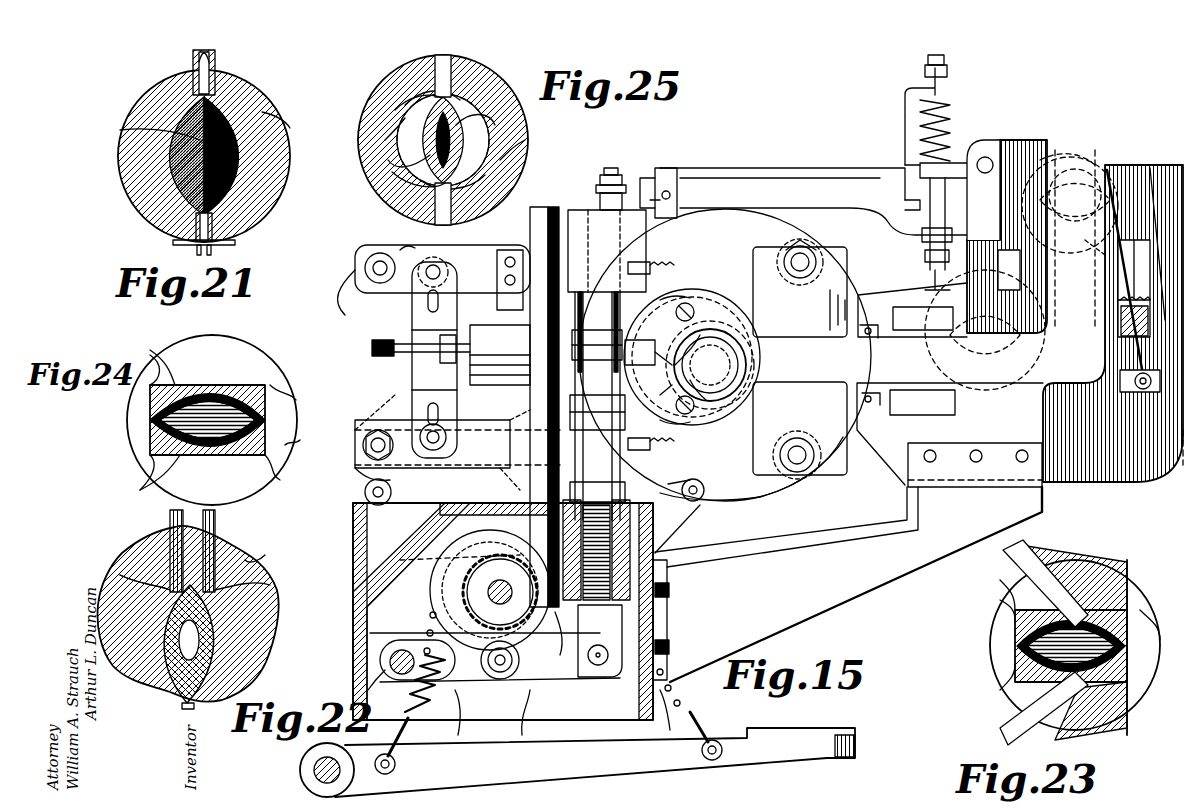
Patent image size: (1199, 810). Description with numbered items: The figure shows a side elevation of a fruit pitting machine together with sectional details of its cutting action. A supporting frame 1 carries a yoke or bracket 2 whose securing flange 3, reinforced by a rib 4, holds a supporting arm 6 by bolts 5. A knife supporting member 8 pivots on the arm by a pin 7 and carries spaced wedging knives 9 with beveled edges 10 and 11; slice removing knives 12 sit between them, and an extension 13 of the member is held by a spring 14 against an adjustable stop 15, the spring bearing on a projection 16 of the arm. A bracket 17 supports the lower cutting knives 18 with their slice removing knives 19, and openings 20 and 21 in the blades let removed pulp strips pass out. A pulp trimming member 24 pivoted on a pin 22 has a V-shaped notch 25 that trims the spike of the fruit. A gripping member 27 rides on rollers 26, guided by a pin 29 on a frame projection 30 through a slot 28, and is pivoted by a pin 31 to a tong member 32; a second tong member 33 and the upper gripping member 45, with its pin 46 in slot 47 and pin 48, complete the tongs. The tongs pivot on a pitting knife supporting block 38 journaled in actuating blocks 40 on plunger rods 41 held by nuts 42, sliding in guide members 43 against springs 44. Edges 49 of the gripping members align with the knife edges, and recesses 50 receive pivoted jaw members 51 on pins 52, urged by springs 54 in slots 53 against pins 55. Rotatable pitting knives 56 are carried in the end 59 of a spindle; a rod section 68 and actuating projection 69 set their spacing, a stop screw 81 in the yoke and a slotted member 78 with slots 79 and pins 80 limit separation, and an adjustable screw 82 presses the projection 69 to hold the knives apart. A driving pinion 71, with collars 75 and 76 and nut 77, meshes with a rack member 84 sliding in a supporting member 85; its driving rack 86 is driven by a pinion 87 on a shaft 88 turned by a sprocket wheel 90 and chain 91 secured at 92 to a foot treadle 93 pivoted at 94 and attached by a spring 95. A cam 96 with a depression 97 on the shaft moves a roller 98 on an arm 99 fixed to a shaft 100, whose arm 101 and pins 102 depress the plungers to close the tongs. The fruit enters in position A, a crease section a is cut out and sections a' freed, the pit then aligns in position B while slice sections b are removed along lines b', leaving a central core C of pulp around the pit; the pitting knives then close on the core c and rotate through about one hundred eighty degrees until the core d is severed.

In FIG. 21, the supporting casting or frame-work 1 is at (118, 128).
In FIG. 25, the supporting casting or frame-work 1 is at (490, 78).
In FIG. 22, the supporting casting or frame-work 1 is at (262, 605).
In FIG. 15, the supporting casting or frame-work 1 is at (353, 632).
In FIG. 15, the yoke or bracket 2 is at (572, 210).
In FIG. 21, the securing flange 3 is at (288, 122).
In FIG. 25, the securing flange 3 is at (520, 125).
In FIG. 15, the securing flange 3 is at (662, 168).
In FIG. 15, the rib 4 is at (615, 190).
In FIG. 15, the bolts 5 is at (675, 178).
In FIG. 15, the supporting arm or bracket 6 is at (805, 168).
In FIG. 15, the pin 7 is at (995, 150).
In FIG. 15, the knife supporting member 8 is at (928, 265).
In FIG. 21, the slice removing and wedging knives 9 is at (204, 50).
In FIG. 22, the slice removing and wedging knives 9 is at (170, 520).
In FIG. 15, the slice removing and wedging knives 9 is at (1085, 160).
In FIG. 15, the beveled cutting edge 10 is at (1070, 205).
In FIG. 22, the beveled cutting edge 11 is at (120, 575).
In FIG. 15, the beveled cutting edge 11 is at (905, 382).
In FIG. 23, the slice removing knives 12 is at (1012, 548).
In FIG. 15, the slice removing knives 12 is at (880, 340).
In FIG. 15, the extension 13 is at (940, 165).
In FIG. 15, the spring 14 is at (918, 145).
In FIG. 15, the adjustable stop member 15 is at (918, 198).
In FIG. 15, the projection 16 is at (950, 85).
In FIG. 23, the bracket 17 is at (1005, 552).
In FIG. 21, the spaced angular cutting knives 18 is at (215, 252).
In FIG. 15, the spaced angular cutting knives 18 is at (1110, 165).
In FIG. 23, the slice removing knives 19 is at (1005, 735).
In FIG. 15, the slice removing knives 19 is at (895, 428).
In FIG. 15, the openings or recesses 20 is at (900, 307).
In FIG. 15, the openings or recesses 21 is at (1125, 270).
In FIG. 15, the pivot pin 22 is at (1120, 378).
In FIG. 21, the pulp trimming member 24 is at (240, 238).
In FIG. 15, the pulp trimming member 24 is at (1118, 300).
In FIG. 15, the V-shaped trimming notch 25 is at (1140, 172).
In FIG. 15, the rollers 26 is at (730, 505).
In FIG. 15, the gripping member 27 is at (362, 448).
In FIG. 15, the guide slot 28 is at (510, 480).
In FIG. 15, the supporting and guide pin 29 is at (512, 418).
In FIG. 15, the projection 30 is at (446, 448).
In FIG. 15, the pin 31 is at (360, 424).
In FIG. 15, the tong member 32 is at (395, 398).
In FIG. 15, the tong member 33 is at (405, 246).
In FIG. 15, the pitting knife supporting block 38 is at (598, 290).
In FIG. 15, the actuating blocks 40 is at (665, 350).
In FIG. 15, the vertical plunger rods 41 is at (670, 618).
In FIG. 15, the adjusting and securing nuts 42 is at (625, 266).
In FIG. 15, the vertical guide and supporting members 43 is at (672, 555).
In FIG. 15, the compression springs 44 is at (672, 586).
In FIG. 15, the gripping member 45 is at (355, 258).
In FIG. 15, the pin 46 is at (818, 250).
In FIG. 15, the slot 47 is at (805, 282).
In FIG. 15, the pin 48 is at (365, 248).
In FIG. 15, the edges 49 is at (800, 380).
In FIG. 15, the recesses 50 is at (728, 318).
In FIG. 15, the adjustable jaw members 51 is at (705, 250).
In FIG. 15, the pins 52 is at (686, 303).
In FIG. 15, the slots or recesses 53 is at (650, 245).
In FIG. 15, the compression springs 54 is at (705, 200).
In FIG. 15, the pins 55 is at (695, 305).
In FIG. 25, the rotatable pitting knives 56 is at (395, 110).
In FIG. 15, the rotatable pitting knives 56 is at (714, 365).
In FIG. 15, the end of spindle 59 is at (680, 330).
In FIG. 15, the rod section 68 is at (478, 325).
In FIG. 15, the actuating projection 69 is at (418, 312).
In FIG. 15, the driving pinion 71 is at (588, 258).
In FIG. 15, the collar 75 is at (497, 262).
In FIG. 15, the collar 76 is at (445, 270).
In FIG. 15, the nut 77 is at (452, 372).
In FIG. 15, the member 78 is at (345, 308).
In FIG. 15, the slots 79 is at (428, 298).
In FIG. 15, the pins 80 is at (395, 478).
In FIG. 15, the limit or stop screw 81 is at (604, 172).
In FIG. 15, the adjustable screw 82 is at (372, 348).
In FIG. 15, the rack member 84 is at (540, 208).
In FIG. 15, the supporting member 85 is at (480, 545).
In FIG. 15, the driving rack 86 is at (465, 580).
In FIG. 15, the pinion 87 is at (558, 680).
In FIG. 15, the shaft 88 is at (480, 685).
In FIG. 15, the sprocket wheel 90 is at (410, 553).
In FIG. 15, the chain 91 is at (428, 625).
In FIG. 15, the chain attachment 92 is at (720, 728).
In FIG. 15, the foot treadle 93 is at (675, 775).
In FIG. 15, the pivot 94 is at (300, 768).
In FIG. 15, the spring 95 is at (435, 735).
In FIG. 15, the cam 96 is at (470, 735).
In FIG. 15, the depression 97 is at (520, 662).
In FIG. 15, the roller 98 is at (540, 730).
In FIG. 15, the arm 99 is at (395, 682).
In FIG. 15, the shaft 100 is at (355, 660).
In FIG. 15, the arm 101 is at (600, 680).
In FIG. 15, the pins 102 is at (668, 735).
In FIG. 22, the dotted fruit position A is at (258, 552).
In FIG. 15, the dotted fruit position A is at (1119, 305).
In FIG. 15, the dotted fruit position B is at (1048, 352).
In FIG. 15, the central core of pulp C is at (785, 338).
In FIG. 25, the section of pulp a is at (440, 138).
In FIG. 22, the section of pulp a is at (258, 494).
In FIG. 23, the section of pulp a is at (1061, 655).
In FIG. 24, the sections a' is at (212, 411).
In FIG. 23, the sections a' is at (1069, 636).
In FIG. 23, the slice sections b is at (1044, 650).
In FIG. 24, the lines b' is at (151, 414).
In FIG. 23, the lines b' is at (990, 592).
In FIG. 24, the central core c is at (285, 438).
In FIG. 23, the central core c is at (1000, 680).
In FIG. 25, the central core d is at (385, 140).